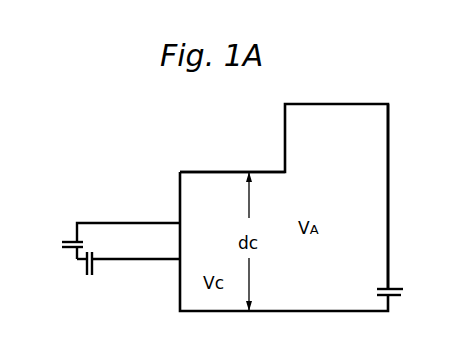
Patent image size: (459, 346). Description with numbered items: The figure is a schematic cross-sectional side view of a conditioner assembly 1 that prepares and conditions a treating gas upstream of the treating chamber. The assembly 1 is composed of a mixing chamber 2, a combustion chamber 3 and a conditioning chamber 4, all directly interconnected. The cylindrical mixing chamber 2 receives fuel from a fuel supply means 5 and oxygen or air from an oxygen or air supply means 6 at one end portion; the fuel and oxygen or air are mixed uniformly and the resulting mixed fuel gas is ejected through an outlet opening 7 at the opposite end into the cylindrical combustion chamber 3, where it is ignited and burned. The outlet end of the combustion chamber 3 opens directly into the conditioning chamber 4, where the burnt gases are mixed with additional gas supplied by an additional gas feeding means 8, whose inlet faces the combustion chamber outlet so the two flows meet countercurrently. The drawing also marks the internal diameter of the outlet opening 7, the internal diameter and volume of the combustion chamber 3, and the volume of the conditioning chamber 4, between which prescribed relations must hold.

The conditioner assembly 1 is at (250, 129).
The mixing chamber 2 is at (118, 232).
The combustion chamber 3 is at (210, 182).
The conditioning chamber 4 is at (383, 123).
The fuel supply means 5 is at (64, 242).
The oxygen or air supply means 6 is at (89, 277).
The outlet opening 7 is at (183, 236).
The additional gas feeding means 8 is at (404, 292).